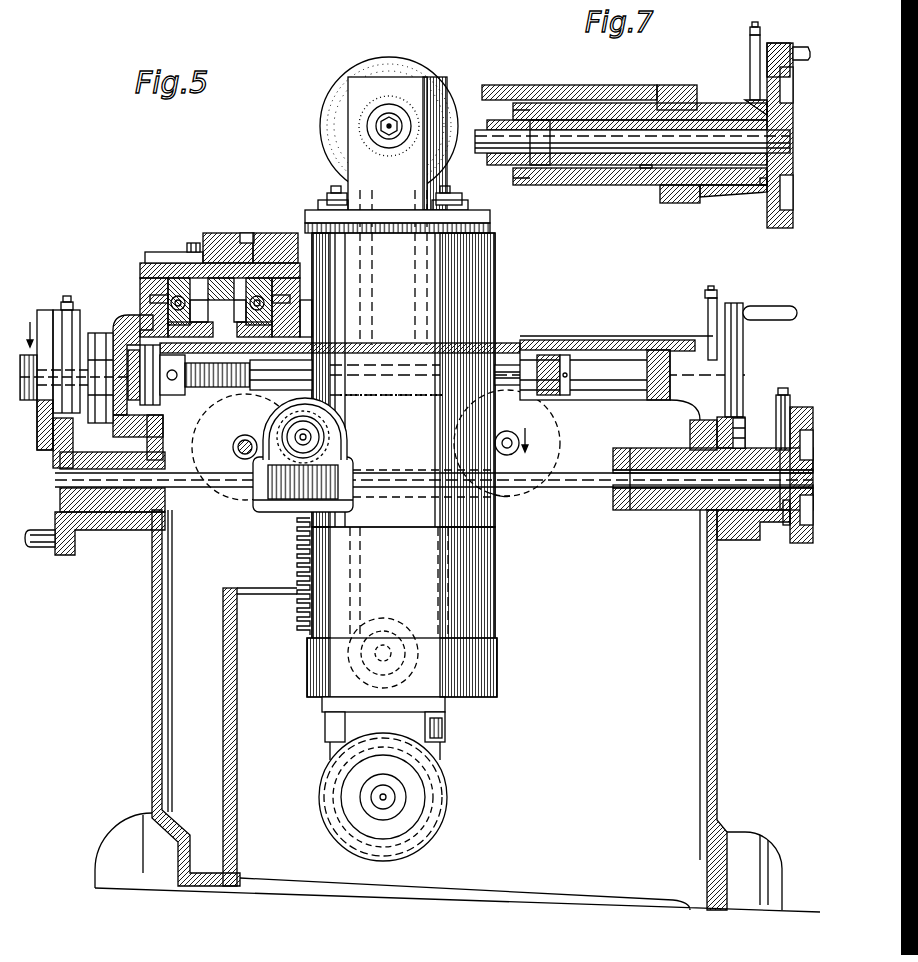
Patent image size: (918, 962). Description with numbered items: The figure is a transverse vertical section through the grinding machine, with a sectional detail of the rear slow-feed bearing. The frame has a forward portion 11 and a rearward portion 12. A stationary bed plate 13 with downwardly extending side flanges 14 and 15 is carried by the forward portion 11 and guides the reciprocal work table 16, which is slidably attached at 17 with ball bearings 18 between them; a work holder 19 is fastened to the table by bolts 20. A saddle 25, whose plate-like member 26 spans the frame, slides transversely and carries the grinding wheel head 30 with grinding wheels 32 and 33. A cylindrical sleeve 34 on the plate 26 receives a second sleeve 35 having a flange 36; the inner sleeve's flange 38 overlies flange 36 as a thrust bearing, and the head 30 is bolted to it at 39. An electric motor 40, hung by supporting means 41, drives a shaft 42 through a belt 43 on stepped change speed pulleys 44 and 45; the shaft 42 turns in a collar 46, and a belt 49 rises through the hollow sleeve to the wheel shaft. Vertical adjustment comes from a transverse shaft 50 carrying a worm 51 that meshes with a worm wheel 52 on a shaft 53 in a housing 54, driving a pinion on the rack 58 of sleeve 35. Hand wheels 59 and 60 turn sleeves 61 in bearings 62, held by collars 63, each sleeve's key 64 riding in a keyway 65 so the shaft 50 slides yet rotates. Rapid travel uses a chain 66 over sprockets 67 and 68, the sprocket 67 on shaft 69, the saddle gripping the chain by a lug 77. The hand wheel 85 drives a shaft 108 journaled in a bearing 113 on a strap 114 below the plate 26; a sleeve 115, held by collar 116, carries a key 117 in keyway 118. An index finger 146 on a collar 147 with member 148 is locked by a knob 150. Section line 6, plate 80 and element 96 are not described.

In FIG. 5, the section line 6 is at (152, 641).
In FIG. 5, the longitudinally extending forward portion 11 is at (152, 695).
In FIG. 5, the rearwardly extending portion 12 is at (717, 696).
In FIG. 5, the stationary bed plate 13 is at (135, 316).
In FIG. 5, the side flange 14 is at (100, 333).
In FIG. 5, the side flange 15 is at (318, 336).
In FIG. 5, the work table 16 is at (258, 278).
In FIG. 5, the slidable attachment 17 is at (160, 296).
In FIG. 5, the ball bearings 18 is at (250, 305).
In FIG. 5, the work holder 19 is at (228, 233).
In FIG. 5, the bolts 20 is at (194, 243).
In FIG. 5, the saddle 25 is at (388, 343).
In FIG. 7, the saddle 25 is at (532, 83).
In FIG. 5, the plate-like member 26 is at (580, 340).
In FIG. 7, the plate-like member 26 is at (495, 85).
In FIG. 5, the grinding wheel head 30 is at (433, 85).
In FIG. 5, the grinding wheel 32 is at (327, 135).
In FIG. 5, the grinding wheel 33 is at (386, 158).
In FIG. 5, the cylindrical sleeve 34 is at (495, 300).
In FIG. 5, the second cylindrical sleeve 35 is at (495, 580).
In FIG. 5, the flange 36 is at (490, 229).
In FIG. 5, the flange 38 is at (490, 216).
In FIG. 5, the bolts 39 is at (333, 194).
In FIG. 5, the electric motor 40 is at (452, 818).
In FIG. 5, the supporting means 41 is at (448, 730).
In FIG. 5, the shaft 42 is at (386, 648).
In FIG. 5, the belt 43 is at (345, 745).
In FIG. 5, the stepped change speed pulley 44 is at (355, 832).
In FIG. 5, the stepped change speed pulley 45 is at (345, 688).
In FIG. 5, the collar 46 is at (497, 676).
In FIG. 5, the belt 49 is at (362, 553).
In FIG. 5, the shaft 50 is at (393, 478).
In FIG. 5, the worm 51 is at (292, 498).
In FIG. 5, the worm wheel 52 is at (326, 430).
In FIG. 5, the shaft 53 is at (310, 433).
In FIG. 5, the housing 54 is at (340, 452).
In FIG. 5, the rack 58 is at (310, 553).
In FIG. 5, the hand wheel 59 is at (52, 548).
In FIG. 5, the hand wheel 60 is at (800, 543).
In FIG. 5, the sleeve 61 is at (190, 512).
In FIG. 5, the bearings 62 is at (125, 530).
In FIG. 5, the collar 63 is at (215, 470).
In FIG. 5, the key 64 is at (680, 490).
In FIG. 5, the keyway 65 is at (213, 488).
In FIG. 5, the chain 66 is at (507, 497).
In FIG. 5, the sprocket 67 is at (163, 435).
In FIG. 5, the sprocket 68 is at (560, 447).
In FIG. 5, the shaft 69 is at (245, 460).
In FIG. 5, the lug 77 is at (383, 267).
In FIG. 5, the plate 80 is at (45, 310).
In FIG. 5, the hand wheel 85 is at (743, 366).
In FIG. 7, the hand wheel 85 is at (780, 220).
In FIG. 5, the gear 96 is at (245, 447).
In FIG. 5, the shaft 108 is at (508, 365).
In FIG. 7, the shaft 108 is at (595, 165).
In FIG. 5, the bearing 113 is at (620, 368).
In FIG. 7, the bearing 113 is at (722, 186).
In FIG. 5, the strap 114 is at (670, 402).
In FIG. 7, the strap 114 is at (668, 203).
In FIG. 5, the sleeve 115 is at (546, 355).
In FIG. 7, the sleeve 115 is at (620, 165).
In FIG. 5, the collar 116 is at (565, 355).
In FIG. 7, the collar 116 is at (520, 180).
In FIG. 7, the key 117 is at (553, 153).
In FIG. 7, the keyway 118 is at (645, 168).
In FIG. 5, the adjustable finger 146 is at (68, 302).
In FIG. 7, the adjustable finger 146 is at (772, 43).
In FIG. 5, the collar 147 is at (786, 525).
In FIG. 7, the collar 147 is at (760, 185).
In FIG. 5, the member 148 is at (745, 425).
In FIG. 7, the member 148 is at (750, 78).
In FIG. 5, the operating knob 150 is at (719, 315).
In FIG. 7, the operating knob 150 is at (741, 20).